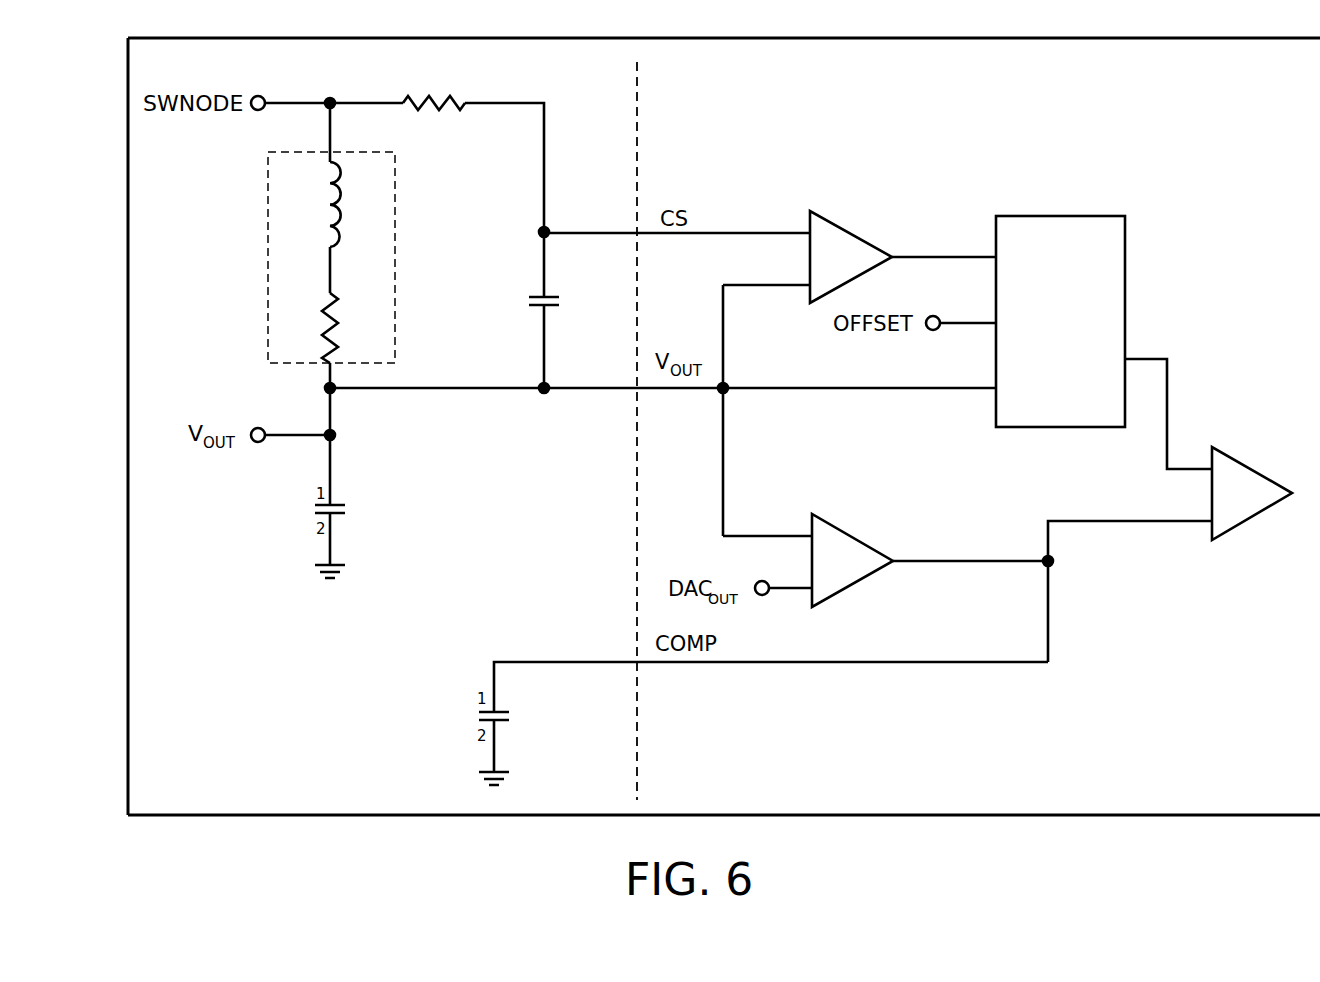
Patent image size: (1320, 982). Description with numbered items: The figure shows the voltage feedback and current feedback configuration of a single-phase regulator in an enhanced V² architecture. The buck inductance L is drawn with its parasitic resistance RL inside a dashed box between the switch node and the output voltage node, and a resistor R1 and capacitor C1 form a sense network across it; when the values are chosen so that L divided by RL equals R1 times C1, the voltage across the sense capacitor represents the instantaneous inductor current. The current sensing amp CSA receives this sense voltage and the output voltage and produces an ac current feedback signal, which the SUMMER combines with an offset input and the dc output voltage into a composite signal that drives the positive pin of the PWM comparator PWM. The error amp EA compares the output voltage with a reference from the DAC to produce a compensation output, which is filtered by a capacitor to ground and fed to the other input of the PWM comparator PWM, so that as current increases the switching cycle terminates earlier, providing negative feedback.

The resistor R1 is at (434, 92).
The capacitor C1 is at (526, 331).
The buck inductance L is at (336, 212).
The parasitic resistance of the buck inductor RL is at (349, 328).
The current sensing amp CSA is at (851, 257).
The summer SUMMER is at (1060, 321).
The PWM Comparator PWM is at (1257, 468).
The error amp EA is at (852, 560).